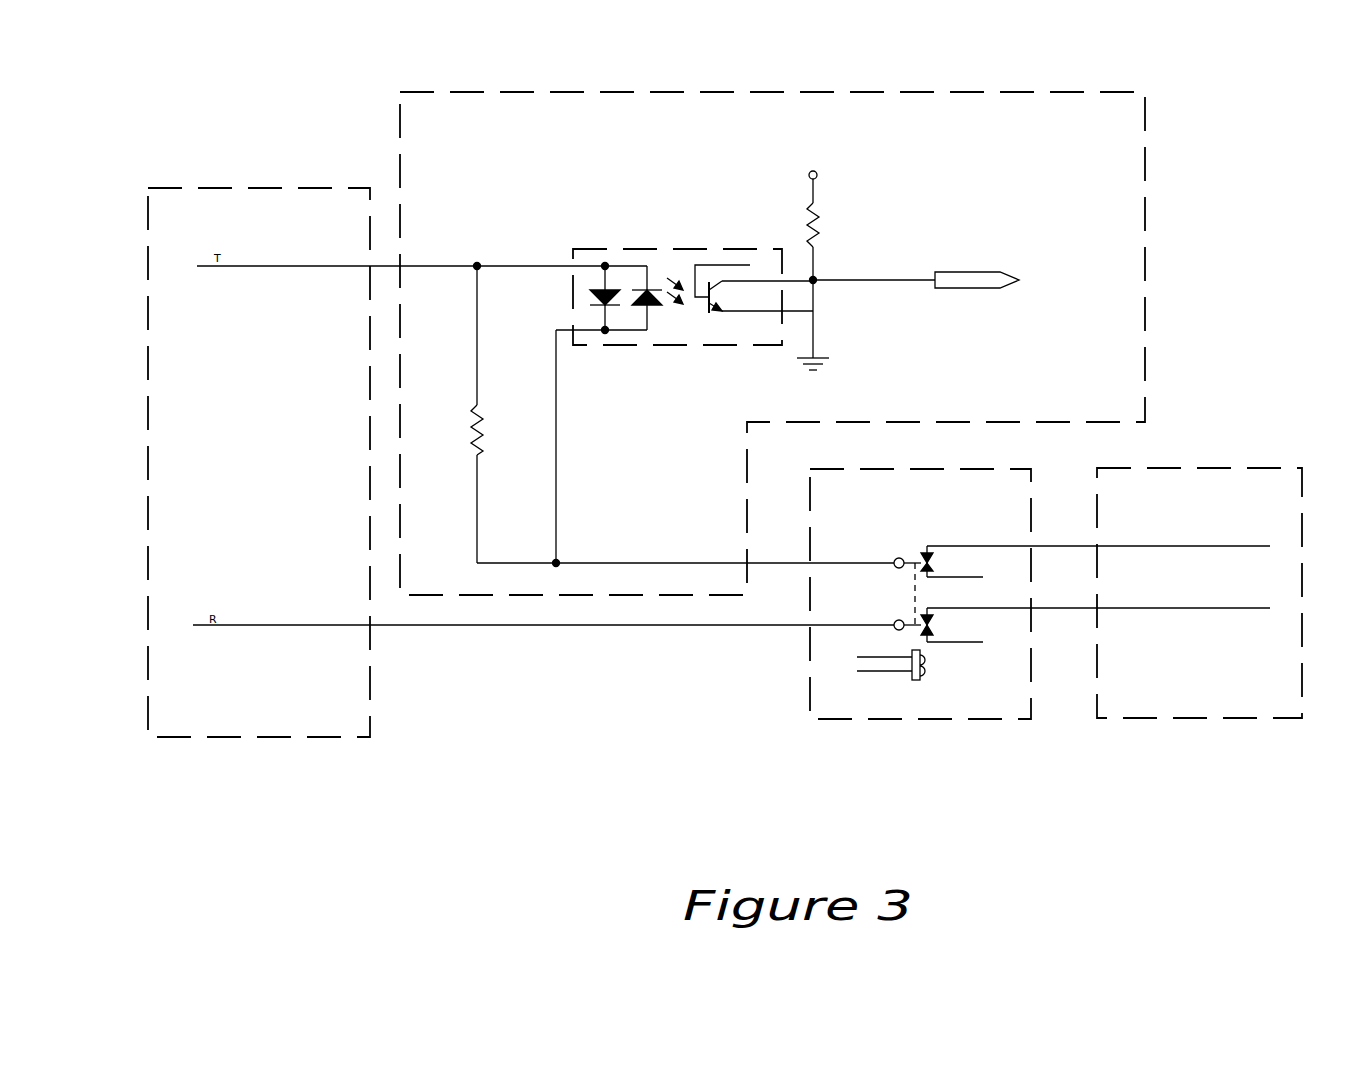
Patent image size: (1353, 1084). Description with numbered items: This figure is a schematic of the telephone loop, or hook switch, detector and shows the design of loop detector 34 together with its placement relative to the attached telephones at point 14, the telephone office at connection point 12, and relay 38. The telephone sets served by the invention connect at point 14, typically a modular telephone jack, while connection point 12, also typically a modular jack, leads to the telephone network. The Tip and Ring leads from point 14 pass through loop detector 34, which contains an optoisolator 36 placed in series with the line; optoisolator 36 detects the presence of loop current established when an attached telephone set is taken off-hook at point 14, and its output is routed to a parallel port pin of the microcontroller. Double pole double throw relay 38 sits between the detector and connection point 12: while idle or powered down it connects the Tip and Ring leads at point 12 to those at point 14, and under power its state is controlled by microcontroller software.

The connection point 12 is at (1178, 708).
The point 14 is at (295, 192).
The telephone loop detector 34 is at (863, 343).
The optoisolator 36 is at (662, 255).
The double pole double throw relay 38 is at (897, 708).